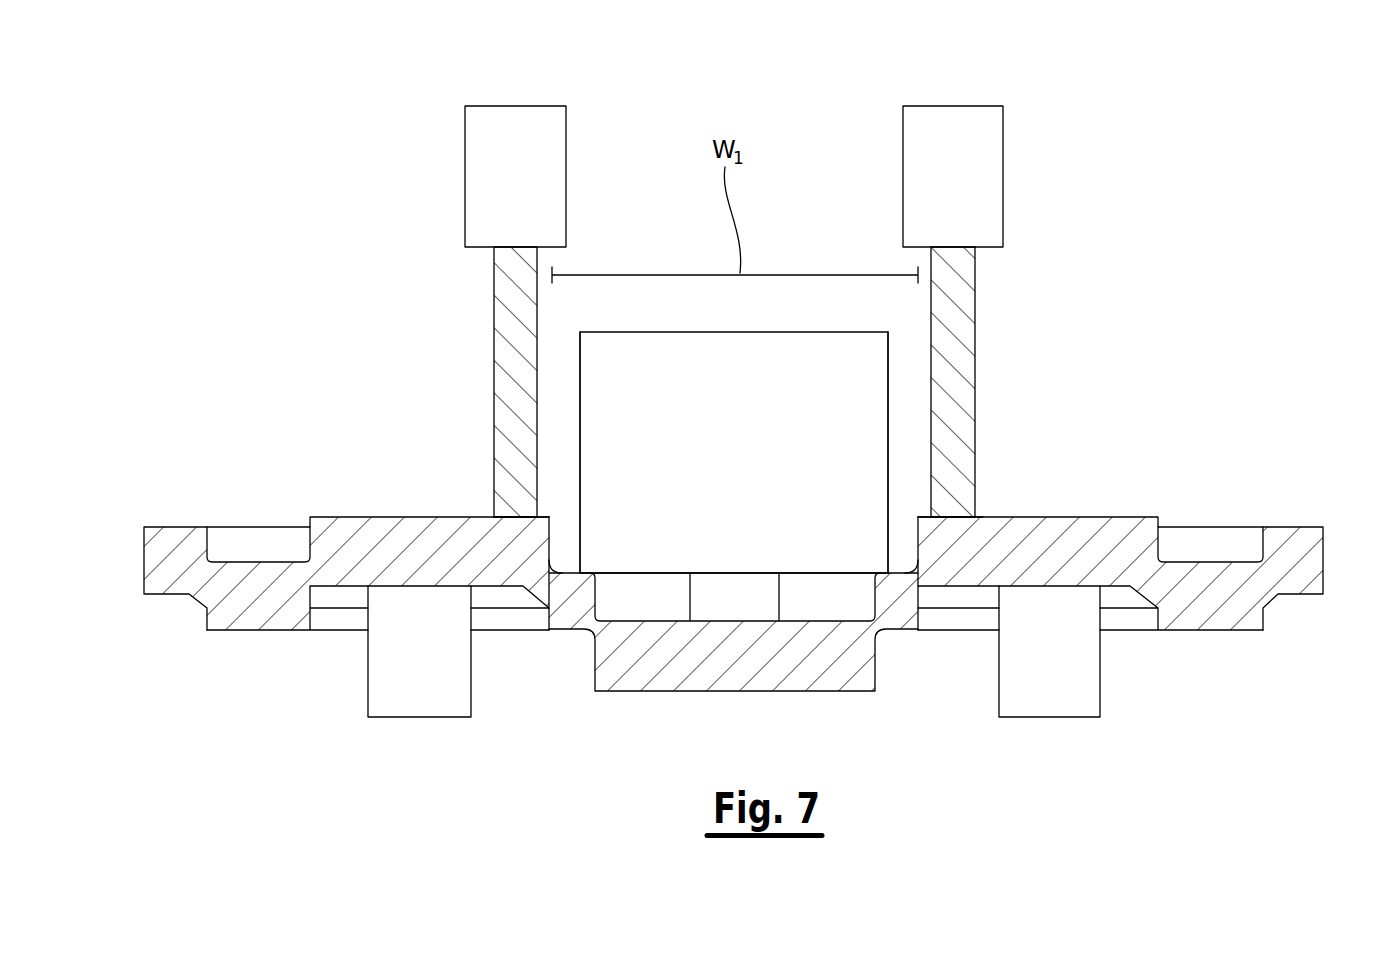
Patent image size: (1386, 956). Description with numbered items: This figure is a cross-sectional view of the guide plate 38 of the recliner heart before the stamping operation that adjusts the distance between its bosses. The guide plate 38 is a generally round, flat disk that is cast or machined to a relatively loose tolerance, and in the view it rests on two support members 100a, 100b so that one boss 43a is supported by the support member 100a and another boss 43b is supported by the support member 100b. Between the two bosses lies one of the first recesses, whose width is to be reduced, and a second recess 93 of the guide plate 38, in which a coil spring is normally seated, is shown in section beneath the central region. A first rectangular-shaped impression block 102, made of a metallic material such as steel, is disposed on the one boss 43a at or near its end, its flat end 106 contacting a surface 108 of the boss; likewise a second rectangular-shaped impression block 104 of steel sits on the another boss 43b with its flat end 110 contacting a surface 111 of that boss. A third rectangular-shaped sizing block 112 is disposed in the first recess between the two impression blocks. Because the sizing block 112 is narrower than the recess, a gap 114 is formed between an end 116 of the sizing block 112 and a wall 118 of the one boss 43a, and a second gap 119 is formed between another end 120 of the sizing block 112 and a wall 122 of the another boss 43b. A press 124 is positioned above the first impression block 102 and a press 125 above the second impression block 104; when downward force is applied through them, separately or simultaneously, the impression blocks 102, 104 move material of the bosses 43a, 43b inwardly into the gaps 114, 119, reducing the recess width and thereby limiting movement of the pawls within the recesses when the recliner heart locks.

The guide plate 38 is at (1211, 665).
The one boss 43a is at (402, 484).
The another boss 43b is at (1065, 477).
The second recess 93 is at (653, 598).
The support member 100a is at (420, 718).
The support member 100b is at (1050, 718).
The first rectangular-shaped impression block 102 is at (434, 319).
The second rectangular-shaped impression block 104 is at (1034, 292).
The flat end 106 is at (493, 517).
The surface 108 is at (345, 517).
The flat end 110 is at (983, 517).
The surface 111 is at (1120, 517).
The third rectangular-shaped sizing block 112 is at (905, 351).
The gap 114 is at (568, 530).
The end 116 is at (580, 404).
The wall 118 is at (551, 548).
The gap 119 is at (902, 545).
The another end 120 is at (887, 410).
The wall 122 is at (917, 548).
The press 124 is at (517, 106).
The press 125 is at (953, 106).